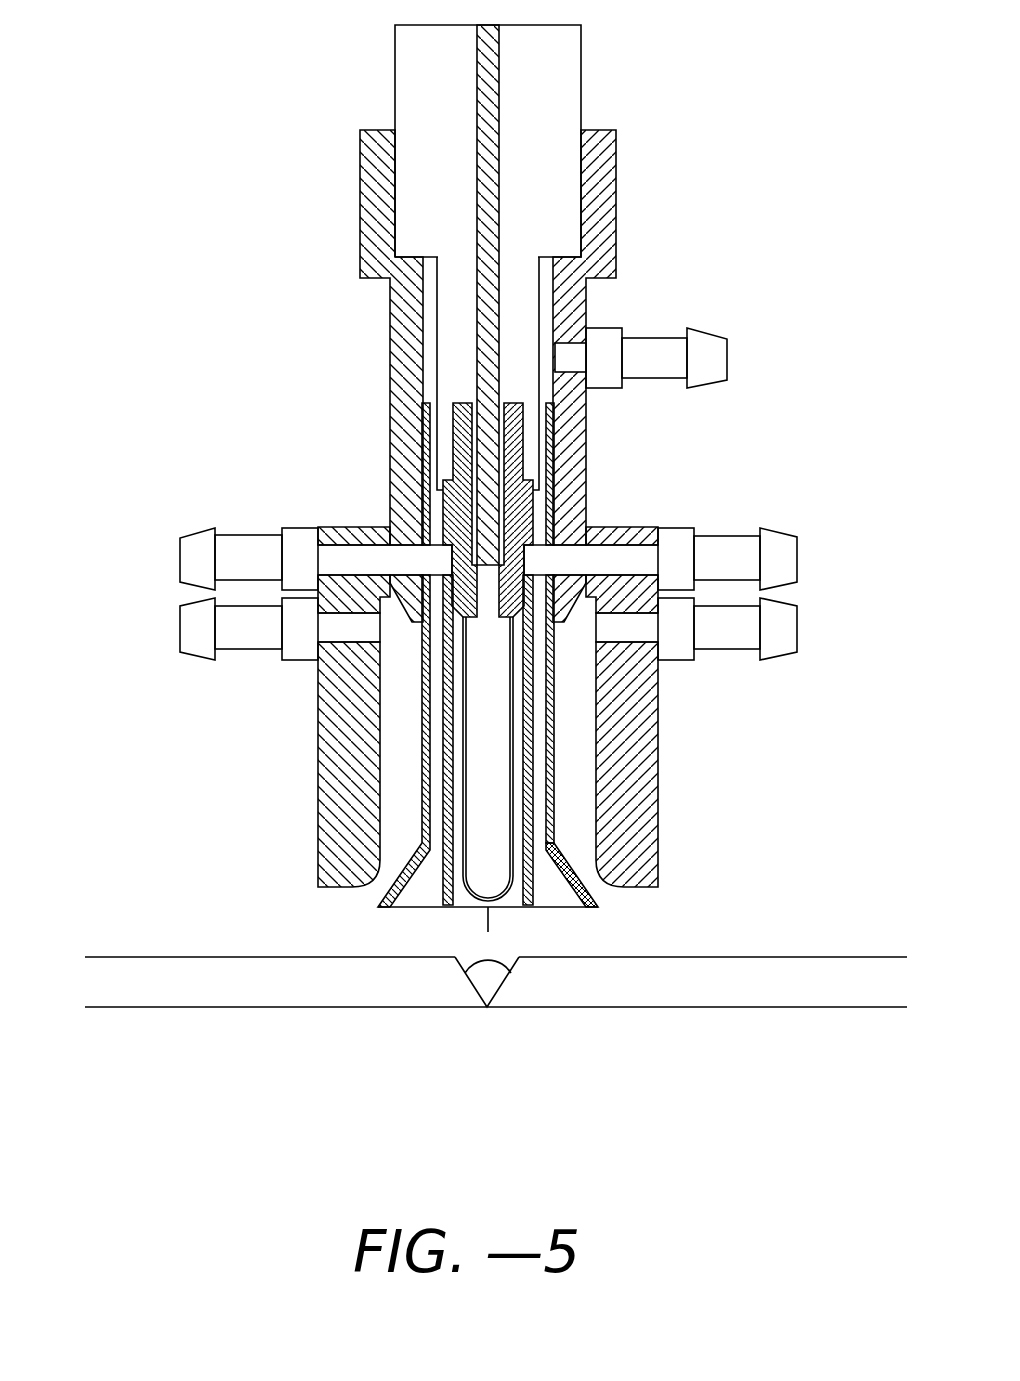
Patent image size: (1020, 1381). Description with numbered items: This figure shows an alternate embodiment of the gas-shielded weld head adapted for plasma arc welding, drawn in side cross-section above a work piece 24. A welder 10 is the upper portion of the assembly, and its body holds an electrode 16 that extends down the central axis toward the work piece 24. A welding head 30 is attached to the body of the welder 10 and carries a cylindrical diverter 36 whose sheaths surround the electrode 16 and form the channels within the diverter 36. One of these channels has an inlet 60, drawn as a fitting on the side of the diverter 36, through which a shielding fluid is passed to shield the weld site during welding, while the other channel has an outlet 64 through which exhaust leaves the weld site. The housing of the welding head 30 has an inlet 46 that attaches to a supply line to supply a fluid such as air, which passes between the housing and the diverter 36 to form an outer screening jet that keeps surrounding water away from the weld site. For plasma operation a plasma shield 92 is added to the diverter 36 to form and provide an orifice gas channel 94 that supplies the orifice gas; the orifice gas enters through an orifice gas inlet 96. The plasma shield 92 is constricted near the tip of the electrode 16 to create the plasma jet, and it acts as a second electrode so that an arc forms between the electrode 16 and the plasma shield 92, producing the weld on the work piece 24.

The welder 10 is at (383, 58).
The welding head 30 is at (340, 192).
The diverter 36 is at (587, 428).
The inlet 60 is at (710, 328).
The outlet 64 is at (245, 535).
The orifice gas inlet 96 is at (730, 537).
The inlet 46 is at (197, 655).
The electrode 16 is at (490, 793).
The plasma shield 92 is at (523, 893).
The orifice gas channel 94 is at (522, 892).
The work piece 24 is at (823, 957).